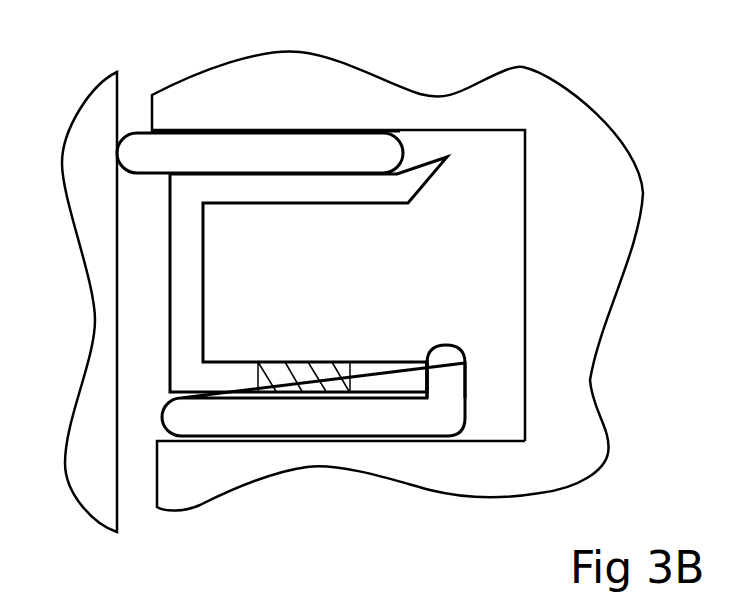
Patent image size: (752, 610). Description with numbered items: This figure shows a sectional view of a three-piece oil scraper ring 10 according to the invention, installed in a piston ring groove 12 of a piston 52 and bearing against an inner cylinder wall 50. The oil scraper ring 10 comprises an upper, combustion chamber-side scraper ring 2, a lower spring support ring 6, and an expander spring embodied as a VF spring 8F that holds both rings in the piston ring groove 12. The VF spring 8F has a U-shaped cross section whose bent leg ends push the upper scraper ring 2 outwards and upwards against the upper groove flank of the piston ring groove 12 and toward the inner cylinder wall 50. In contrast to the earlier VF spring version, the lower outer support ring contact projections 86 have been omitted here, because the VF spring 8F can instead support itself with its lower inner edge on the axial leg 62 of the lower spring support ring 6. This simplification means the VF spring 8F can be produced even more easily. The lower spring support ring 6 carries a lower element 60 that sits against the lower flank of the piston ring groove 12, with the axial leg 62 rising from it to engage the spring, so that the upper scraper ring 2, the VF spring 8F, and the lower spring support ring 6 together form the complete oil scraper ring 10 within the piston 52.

The oil scraper ring 10 is at (424, 150).
The piston 52 is at (276, 105).
The upper scraper ring 2 is at (260, 153).
The VF spring 8F is at (308, 275).
The inner cylinder wall 50 is at (89, 302).
The support ring contact projections 86 is at (427, 360).
The piston ring groove 12 is at (497, 365).
The axial leg 62 is at (446, 371).
The lower sealing strip 60 is at (313, 399).
The lower spring support ring 6 is at (438, 406).